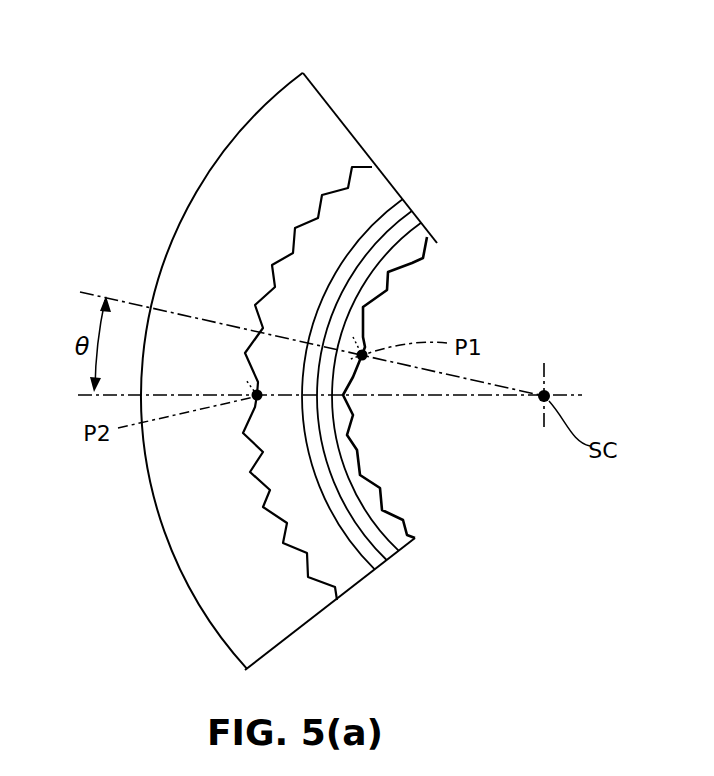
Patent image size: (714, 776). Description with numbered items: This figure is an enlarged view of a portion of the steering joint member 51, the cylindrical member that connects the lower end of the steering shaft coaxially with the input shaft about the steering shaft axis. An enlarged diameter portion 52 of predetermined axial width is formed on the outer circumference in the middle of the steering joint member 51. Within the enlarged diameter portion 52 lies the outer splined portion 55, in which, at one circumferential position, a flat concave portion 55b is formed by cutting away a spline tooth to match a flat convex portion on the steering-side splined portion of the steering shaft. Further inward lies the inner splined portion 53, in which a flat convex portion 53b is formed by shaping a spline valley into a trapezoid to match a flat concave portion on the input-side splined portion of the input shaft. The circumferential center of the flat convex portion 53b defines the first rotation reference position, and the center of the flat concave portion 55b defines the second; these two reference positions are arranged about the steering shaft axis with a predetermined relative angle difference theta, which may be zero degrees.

The steering joint member 51 is at (202, 122).
The enlarged diameter portion 52 is at (212, 204).
The inner splined portion 53 is at (398, 284).
The flat convex portion 53b is at (368, 343).
The outer splined portion 55 is at (258, 504).
The flat concave portion 55b is at (252, 408).